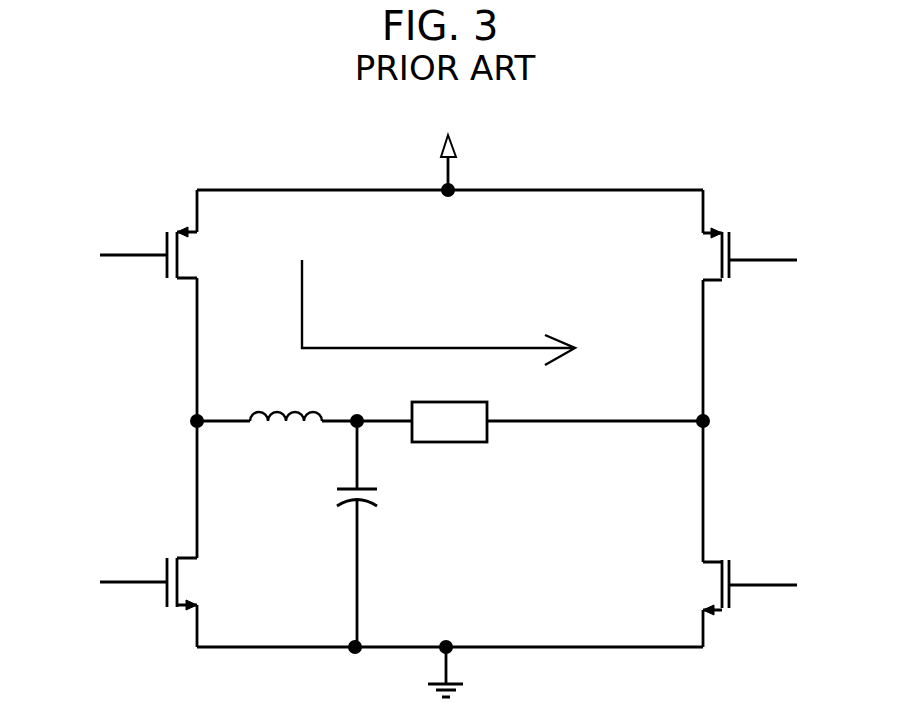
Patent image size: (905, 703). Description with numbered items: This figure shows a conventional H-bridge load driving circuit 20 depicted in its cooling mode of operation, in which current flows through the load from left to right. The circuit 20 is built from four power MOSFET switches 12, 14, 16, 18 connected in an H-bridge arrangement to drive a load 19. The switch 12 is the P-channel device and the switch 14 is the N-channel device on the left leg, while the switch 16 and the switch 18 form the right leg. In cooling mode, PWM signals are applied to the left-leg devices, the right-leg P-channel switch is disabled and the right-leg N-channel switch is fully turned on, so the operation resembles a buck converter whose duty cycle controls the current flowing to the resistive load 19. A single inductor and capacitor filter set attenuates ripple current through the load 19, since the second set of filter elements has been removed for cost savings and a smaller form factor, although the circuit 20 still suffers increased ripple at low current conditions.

The circuit 20 is at (236, 166).
The switch 12 is at (197, 255).
The switch 14 is at (197, 582).
The switch 16 is at (703, 258).
The switch 18 is at (703, 582).
The load 19 is at (460, 442).